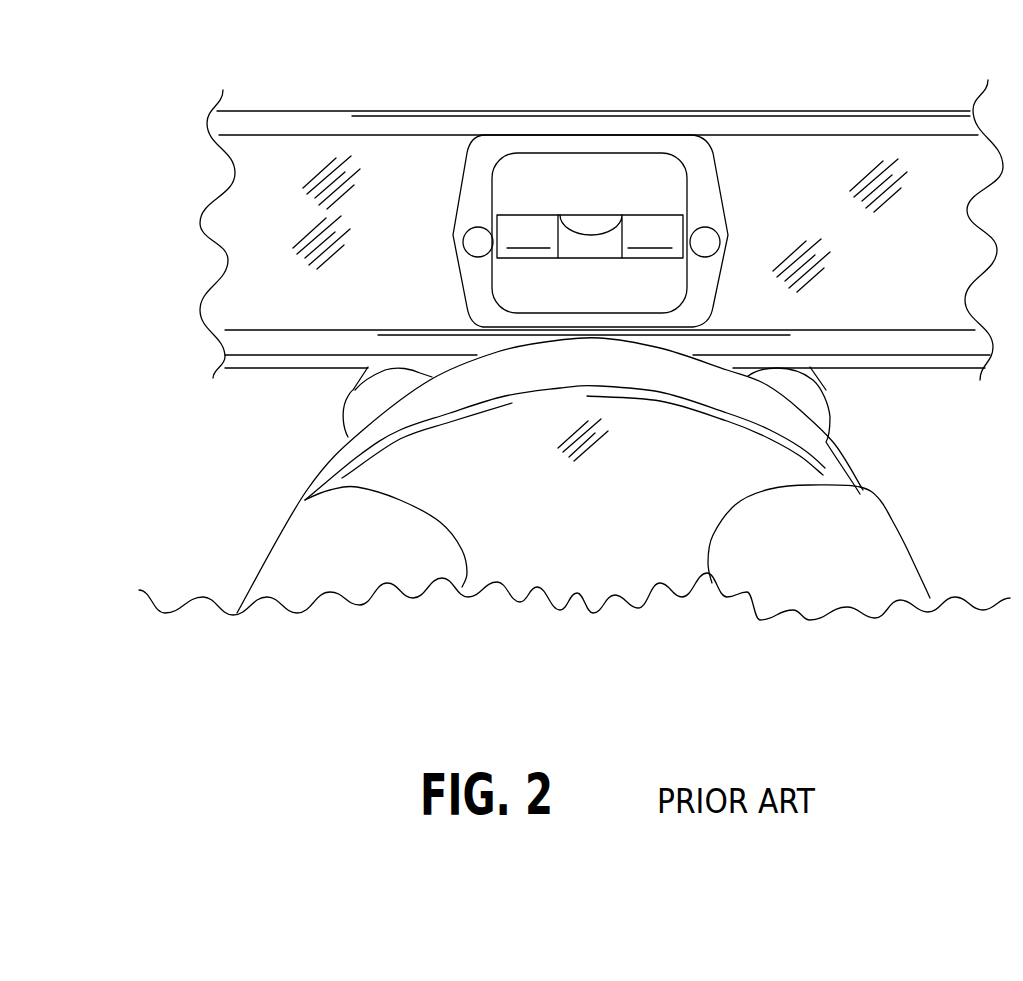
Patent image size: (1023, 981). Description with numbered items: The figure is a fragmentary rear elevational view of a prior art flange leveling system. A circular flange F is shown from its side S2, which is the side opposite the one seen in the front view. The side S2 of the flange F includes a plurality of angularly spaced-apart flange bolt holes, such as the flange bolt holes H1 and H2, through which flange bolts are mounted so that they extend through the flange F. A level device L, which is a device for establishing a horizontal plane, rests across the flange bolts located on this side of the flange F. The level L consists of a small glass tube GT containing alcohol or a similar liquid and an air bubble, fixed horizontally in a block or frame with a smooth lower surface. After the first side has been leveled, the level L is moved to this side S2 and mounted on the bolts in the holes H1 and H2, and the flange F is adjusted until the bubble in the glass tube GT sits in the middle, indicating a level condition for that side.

The glass tube GT is at (525, 232).
The level device L is at (737, 183).
The side of flange S2 is at (677, 461).
The circular flange F is at (778, 477).
The flange bolt hole H1 is at (868, 537).
The flange bolt hole H2 is at (308, 568).